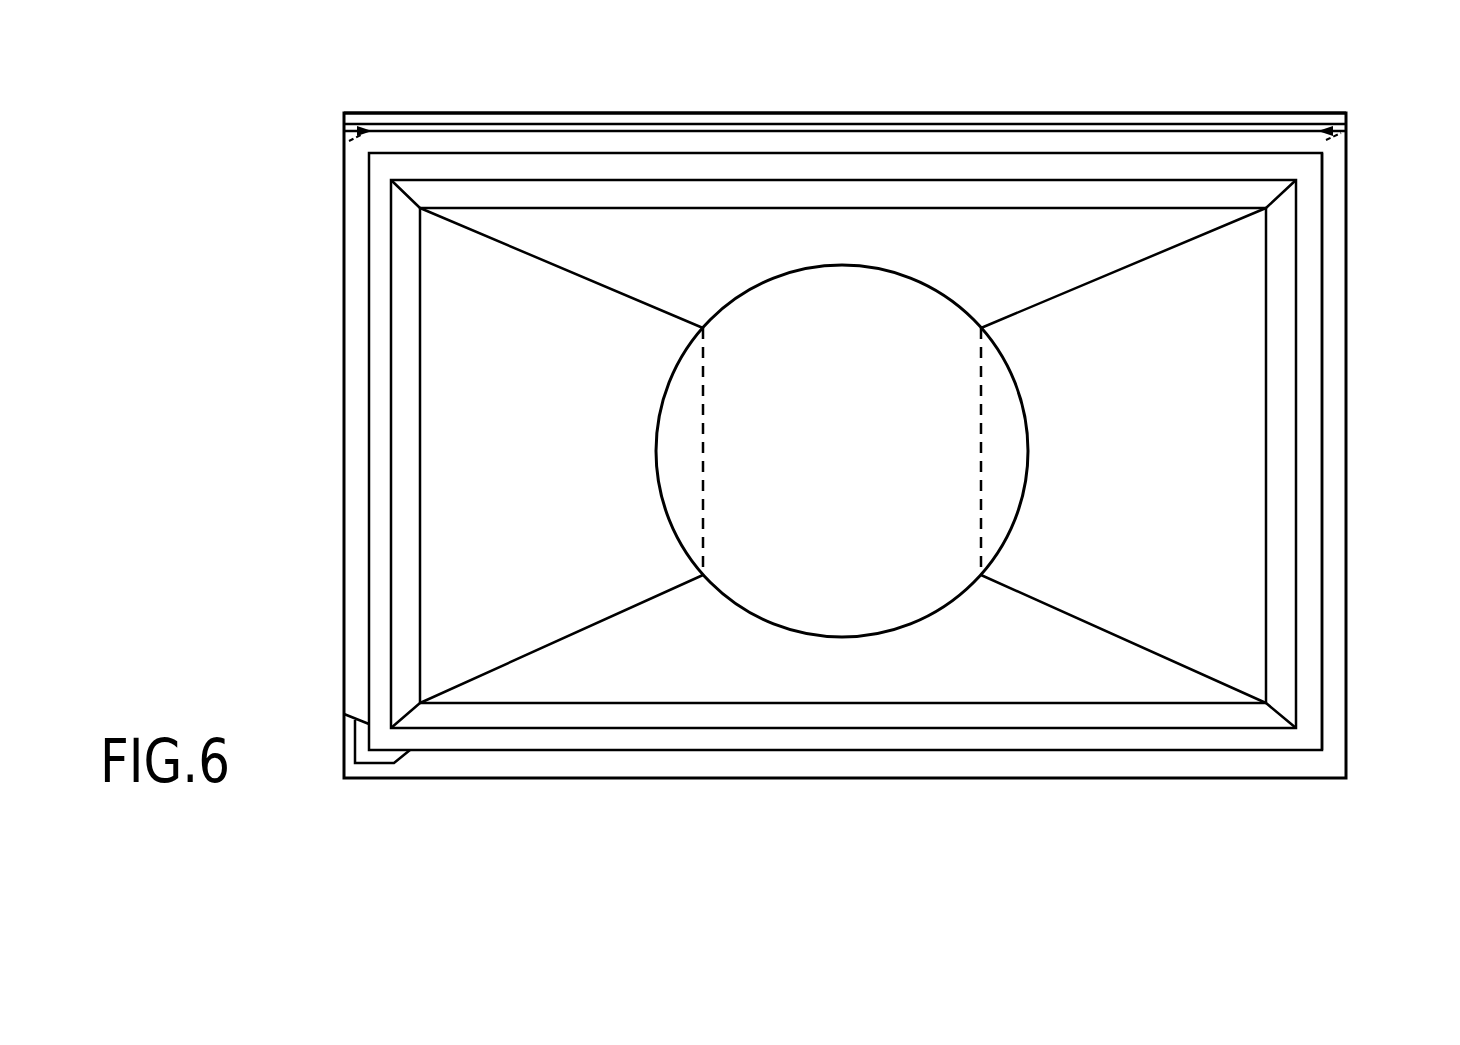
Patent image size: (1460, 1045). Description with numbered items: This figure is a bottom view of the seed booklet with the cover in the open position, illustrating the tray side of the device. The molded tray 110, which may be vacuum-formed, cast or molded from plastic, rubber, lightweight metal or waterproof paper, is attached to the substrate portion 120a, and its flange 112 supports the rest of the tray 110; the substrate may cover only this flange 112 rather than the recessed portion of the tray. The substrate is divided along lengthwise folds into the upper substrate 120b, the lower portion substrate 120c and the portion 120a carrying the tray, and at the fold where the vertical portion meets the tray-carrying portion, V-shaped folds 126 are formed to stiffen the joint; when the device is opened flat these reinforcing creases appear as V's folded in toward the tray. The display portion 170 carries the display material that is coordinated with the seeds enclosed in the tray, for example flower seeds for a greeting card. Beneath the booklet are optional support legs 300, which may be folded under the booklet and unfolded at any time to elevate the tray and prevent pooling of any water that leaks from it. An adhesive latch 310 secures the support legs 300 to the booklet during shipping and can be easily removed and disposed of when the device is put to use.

The molded tray 110 is at (1140, 668).
The flange 112 is at (1310, 598).
The substrate portion attached to the tray 120a is at (1332, 675).
The upper substrate 120b is at (966, 135).
The lower portion substrate 120c is at (1080, 113).
The V-shaped folds 126 is at (1346, 124).
The display portion 170 is at (398, 133).
The support legs 300 is at (1245, 275).
The adhesive latch 310 is at (795, 295).